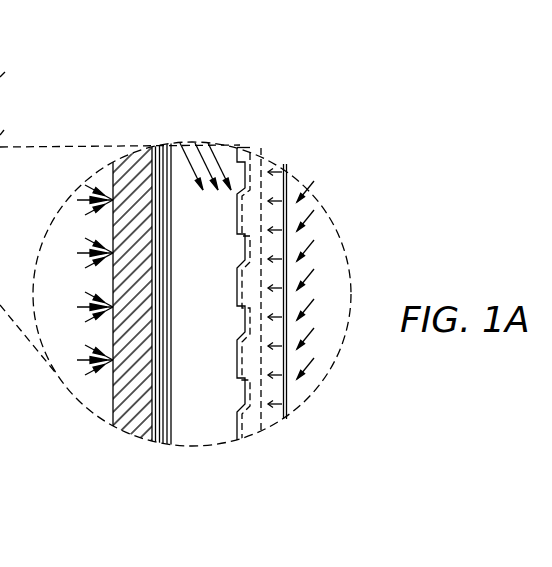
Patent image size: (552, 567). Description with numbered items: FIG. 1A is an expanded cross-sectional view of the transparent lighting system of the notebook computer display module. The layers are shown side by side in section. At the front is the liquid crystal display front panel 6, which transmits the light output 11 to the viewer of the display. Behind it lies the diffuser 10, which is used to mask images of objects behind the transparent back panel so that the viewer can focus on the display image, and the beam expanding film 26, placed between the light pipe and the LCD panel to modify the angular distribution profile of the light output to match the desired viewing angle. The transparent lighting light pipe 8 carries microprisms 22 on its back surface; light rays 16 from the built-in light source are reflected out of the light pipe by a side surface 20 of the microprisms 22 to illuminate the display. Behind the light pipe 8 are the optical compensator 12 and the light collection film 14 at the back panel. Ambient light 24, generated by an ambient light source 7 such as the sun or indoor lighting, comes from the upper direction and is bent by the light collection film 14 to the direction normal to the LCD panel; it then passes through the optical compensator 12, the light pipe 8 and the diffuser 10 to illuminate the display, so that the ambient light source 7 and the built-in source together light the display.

The ambient light source 7 is at (142, 65).
The light output 11 is at (72, 267).
The liquid crystal display front panel 6 is at (130, 423).
The diffuser 10 is at (152, 307).
The beam expanding film 26 is at (188, 459).
The light rays 16 is at (211, 146).
The transparent lighting light pipe 8 is at (304, 304).
The microprisms 22 is at (274, 290).
The optical compensator 12 is at (247, 435).
The side surface 20 is at (296, 279).
The light collection film 14 is at (284, 418).
The ambient light 24 is at (344, 280).